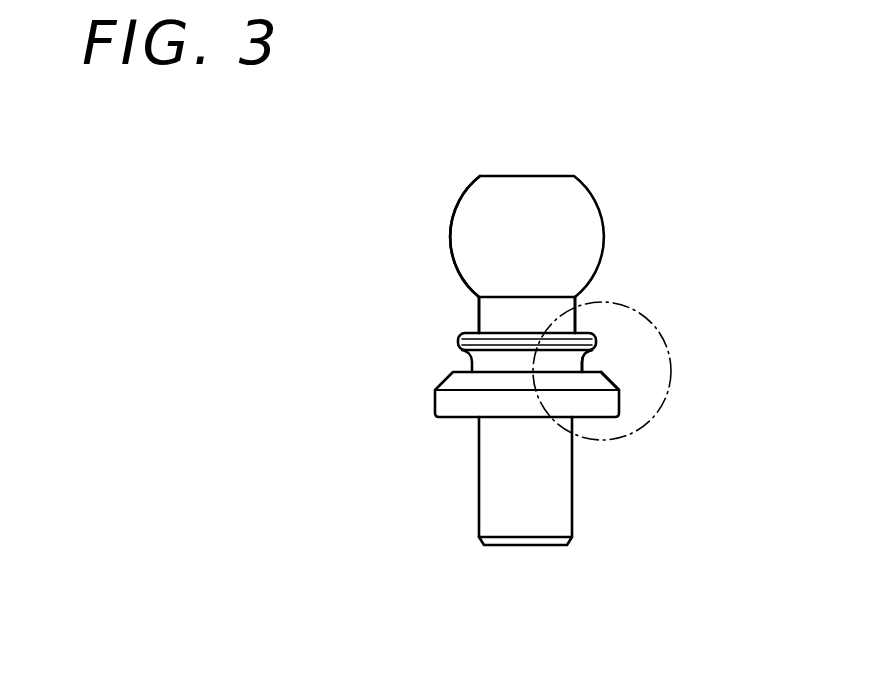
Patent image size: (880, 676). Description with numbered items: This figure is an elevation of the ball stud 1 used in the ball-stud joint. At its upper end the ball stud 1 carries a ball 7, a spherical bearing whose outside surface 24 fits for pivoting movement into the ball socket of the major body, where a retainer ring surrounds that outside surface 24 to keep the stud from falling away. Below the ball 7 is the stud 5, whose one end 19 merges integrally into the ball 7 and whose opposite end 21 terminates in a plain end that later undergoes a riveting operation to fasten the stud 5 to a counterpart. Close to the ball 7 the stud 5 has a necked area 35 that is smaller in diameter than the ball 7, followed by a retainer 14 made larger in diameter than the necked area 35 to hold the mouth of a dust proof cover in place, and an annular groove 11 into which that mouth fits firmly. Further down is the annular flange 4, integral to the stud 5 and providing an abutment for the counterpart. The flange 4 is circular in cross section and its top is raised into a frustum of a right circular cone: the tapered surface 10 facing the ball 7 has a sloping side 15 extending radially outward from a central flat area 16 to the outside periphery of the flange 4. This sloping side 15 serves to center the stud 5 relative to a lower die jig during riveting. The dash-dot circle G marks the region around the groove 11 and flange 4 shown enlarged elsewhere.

The ball stud 1 is at (529, 347).
The ball 7 is at (482, 210).
The outside surface of the ball 24 is at (450, 232).
The one end of the stud 19 is at (523, 305).
The necked area 35 is at (520, 315).
The retainer 14 is at (460, 345).
The central flat area 16 is at (458, 366).
The annular groove 11 is at (583, 358).
The annular flange 4 is at (452, 407).
The tapered surface 10 is at (618, 390).
The sloping side 15 is at (583, 383).
The stud 5 is at (513, 476).
The opposite end of the stud 21 is at (538, 518).
The enlarged detail region G is at (670, 343).